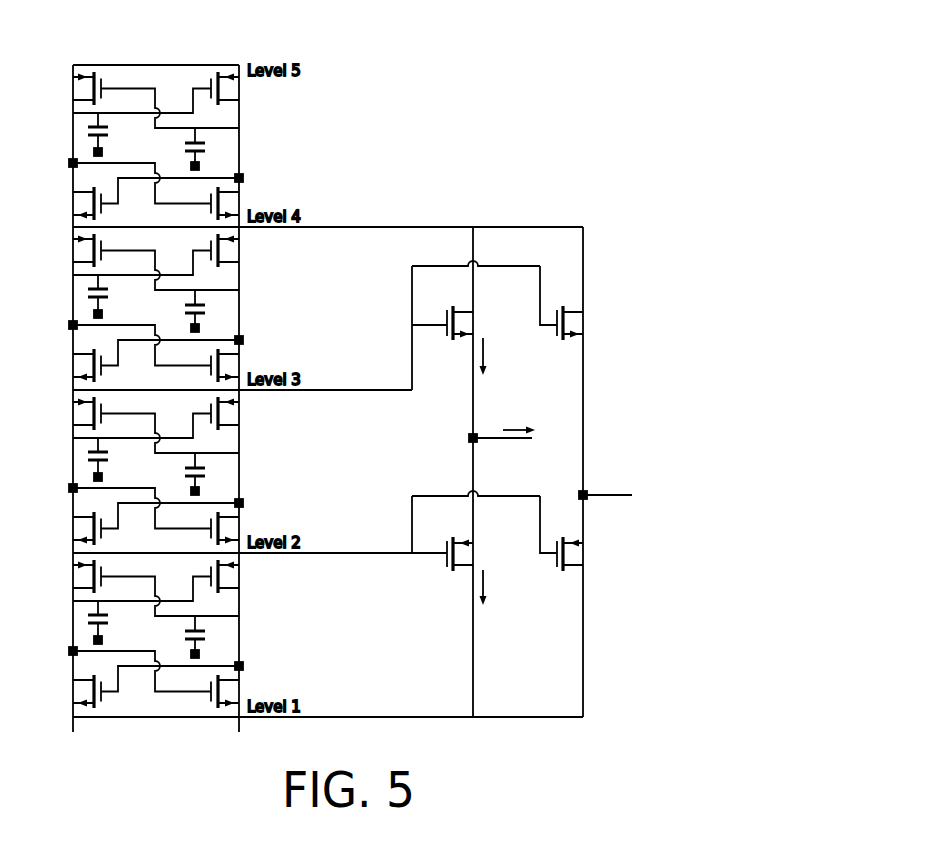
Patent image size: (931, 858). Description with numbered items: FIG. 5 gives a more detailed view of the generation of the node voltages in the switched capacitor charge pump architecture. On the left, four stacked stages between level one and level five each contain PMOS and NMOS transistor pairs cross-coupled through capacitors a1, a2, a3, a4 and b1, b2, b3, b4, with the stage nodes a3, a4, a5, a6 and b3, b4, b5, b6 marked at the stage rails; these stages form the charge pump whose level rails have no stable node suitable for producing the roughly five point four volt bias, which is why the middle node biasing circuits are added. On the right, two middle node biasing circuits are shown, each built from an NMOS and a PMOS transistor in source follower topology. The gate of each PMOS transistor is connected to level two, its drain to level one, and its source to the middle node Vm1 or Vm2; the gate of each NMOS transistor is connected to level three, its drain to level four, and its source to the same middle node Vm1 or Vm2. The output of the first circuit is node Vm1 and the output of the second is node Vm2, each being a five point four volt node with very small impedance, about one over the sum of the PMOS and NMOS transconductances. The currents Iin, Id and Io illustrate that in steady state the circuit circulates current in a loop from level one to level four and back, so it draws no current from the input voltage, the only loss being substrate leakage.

The capacitor a1 is at (205, 637).
The capacitor a2 is at (109, 459).
The capacitor a3 / node a3 is at (89, 467).
The capacitor a4 / node a4 is at (89, 304).
The node a5 is at (62, 325).
The node a6 is at (62, 163).
The capacitor b1 is at (109, 622).
The capacitor b2 is at (205, 474).
The capacitor b3 / node b3 is at (225, 482).
The capacitor b4 / node b4 is at (225, 319).
The node b5 is at (250, 340).
The node b6 is at (250, 178).
The middle node Vm1 is at (481, 432).
The middle node Vm2 is at (605, 486).
The input current Iin is at (493, 356).
The difference current Id is at (528, 429).
The output current Io = Iin - Id Io is at (518, 587).